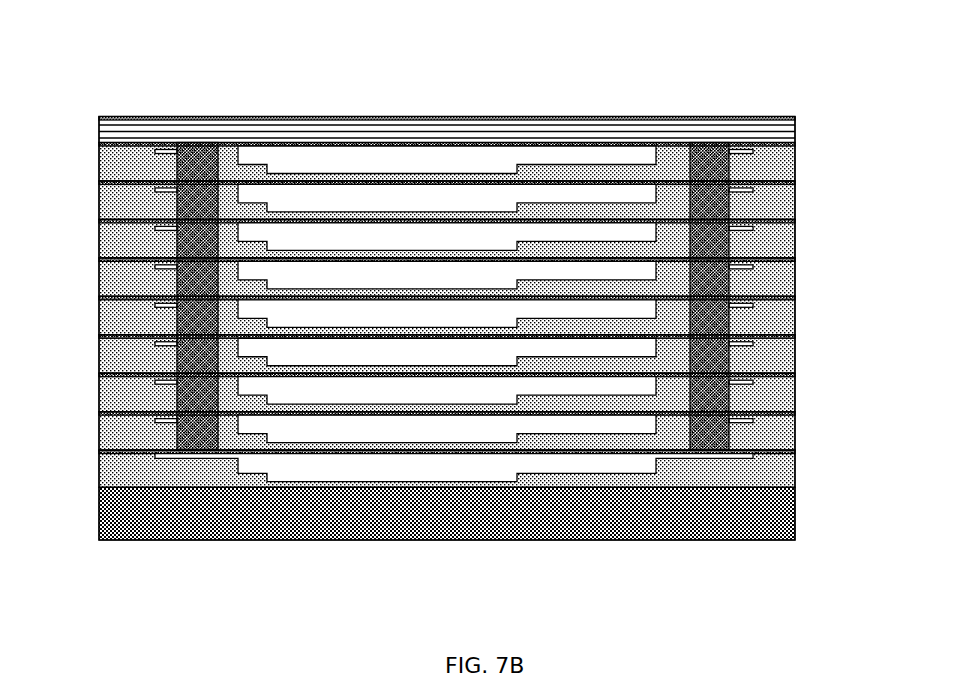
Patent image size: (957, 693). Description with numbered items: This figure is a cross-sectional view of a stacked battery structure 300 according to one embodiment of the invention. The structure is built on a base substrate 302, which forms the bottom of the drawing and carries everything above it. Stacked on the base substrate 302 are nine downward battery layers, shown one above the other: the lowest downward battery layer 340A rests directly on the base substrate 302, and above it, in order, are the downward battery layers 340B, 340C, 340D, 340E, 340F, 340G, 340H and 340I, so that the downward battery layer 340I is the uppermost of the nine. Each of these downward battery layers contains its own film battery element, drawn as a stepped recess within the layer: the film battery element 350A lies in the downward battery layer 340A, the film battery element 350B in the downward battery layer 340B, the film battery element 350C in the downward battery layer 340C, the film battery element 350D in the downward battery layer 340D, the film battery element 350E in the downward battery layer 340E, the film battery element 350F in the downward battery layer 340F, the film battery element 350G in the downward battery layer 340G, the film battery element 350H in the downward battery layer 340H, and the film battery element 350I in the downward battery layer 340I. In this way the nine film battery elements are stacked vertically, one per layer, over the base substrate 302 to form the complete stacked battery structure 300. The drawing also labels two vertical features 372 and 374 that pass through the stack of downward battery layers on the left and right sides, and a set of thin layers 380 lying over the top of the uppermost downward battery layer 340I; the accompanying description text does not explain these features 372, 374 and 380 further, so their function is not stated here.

The stacked battery structure 300 is at (76, 37).
The base substrate 302 is at (430, 523).
The downward battery layer 340I is at (797, 142).
The downward battery layer 340H is at (797, 181).
The downward battery layer 340G is at (797, 219).
The downward battery layer 340F is at (797, 258).
The downward battery layer 340E is at (797, 296).
The downward battery layer 340D is at (797, 335).
The downward battery layer 340C is at (797, 373).
The downward battery layer 340B is at (797, 412).
The downward battery layer 340A is at (797, 450).
The film battery element 350I is at (383, 166).
The film battery element 350H is at (380, 204).
The film battery element 350G is at (380, 243).
The film battery element 350F is at (381, 281).
The film battery element 350E is at (381, 320).
The film battery element 350D is at (380, 358).
The film battery element 350C is at (380, 396).
The film battery element 350B is at (380, 435).
The film battery element 350A is at (380, 479).
The through via 372 is at (190, 158).
The through via 374 is at (702, 152).
The passivation / top layers 380 is at (797, 116).